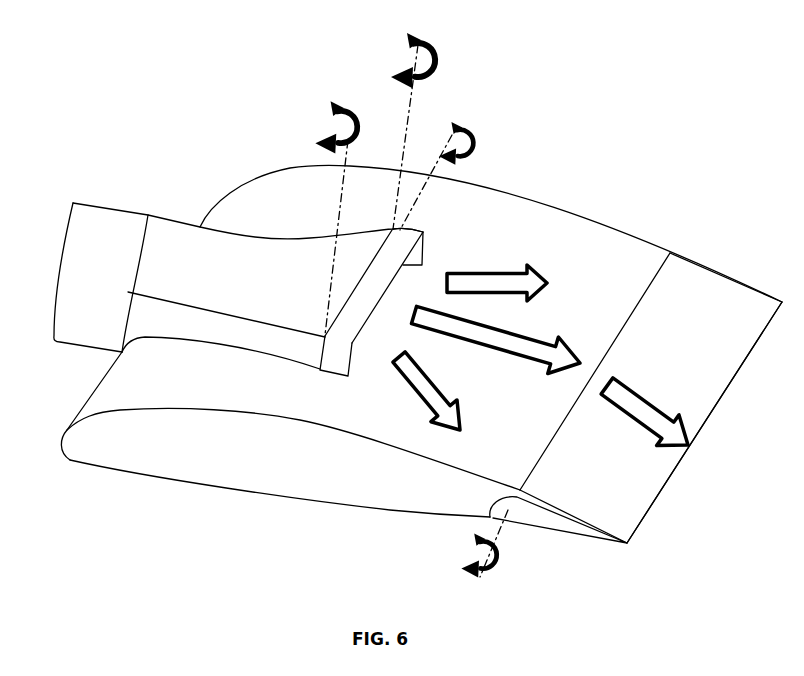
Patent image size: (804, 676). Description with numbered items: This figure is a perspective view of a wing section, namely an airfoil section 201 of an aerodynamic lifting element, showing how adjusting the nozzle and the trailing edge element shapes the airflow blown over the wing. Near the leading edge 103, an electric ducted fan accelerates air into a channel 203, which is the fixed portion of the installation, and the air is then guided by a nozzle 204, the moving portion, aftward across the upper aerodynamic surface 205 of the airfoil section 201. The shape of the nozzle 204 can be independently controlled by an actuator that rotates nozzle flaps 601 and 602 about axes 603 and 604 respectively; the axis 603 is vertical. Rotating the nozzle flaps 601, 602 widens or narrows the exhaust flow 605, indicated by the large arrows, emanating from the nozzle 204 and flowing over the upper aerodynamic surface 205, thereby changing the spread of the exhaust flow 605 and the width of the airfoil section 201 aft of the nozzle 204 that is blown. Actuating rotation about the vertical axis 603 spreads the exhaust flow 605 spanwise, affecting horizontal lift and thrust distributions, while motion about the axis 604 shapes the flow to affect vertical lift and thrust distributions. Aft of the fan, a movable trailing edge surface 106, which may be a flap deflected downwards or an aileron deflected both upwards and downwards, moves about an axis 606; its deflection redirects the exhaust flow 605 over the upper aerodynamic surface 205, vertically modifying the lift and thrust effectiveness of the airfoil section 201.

The airfoil section 201 is at (610, 139).
The leading edge 103 is at (106, 379).
The channel 203 is at (118, 228).
The nozzle 204 is at (430, 227).
The nozzle flap 602 is at (380, 277).
The nozzle flap 601 is at (332, 363).
The vertical axis 603 is at (407, 130).
The axis 604 is at (443, 148).
The exhaust flow 605 is at (544, 349).
The upper aerodynamic surface 205 is at (638, 262).
The trailing edge surface 106 is at (648, 478).
The axis 606 is at (500, 533).